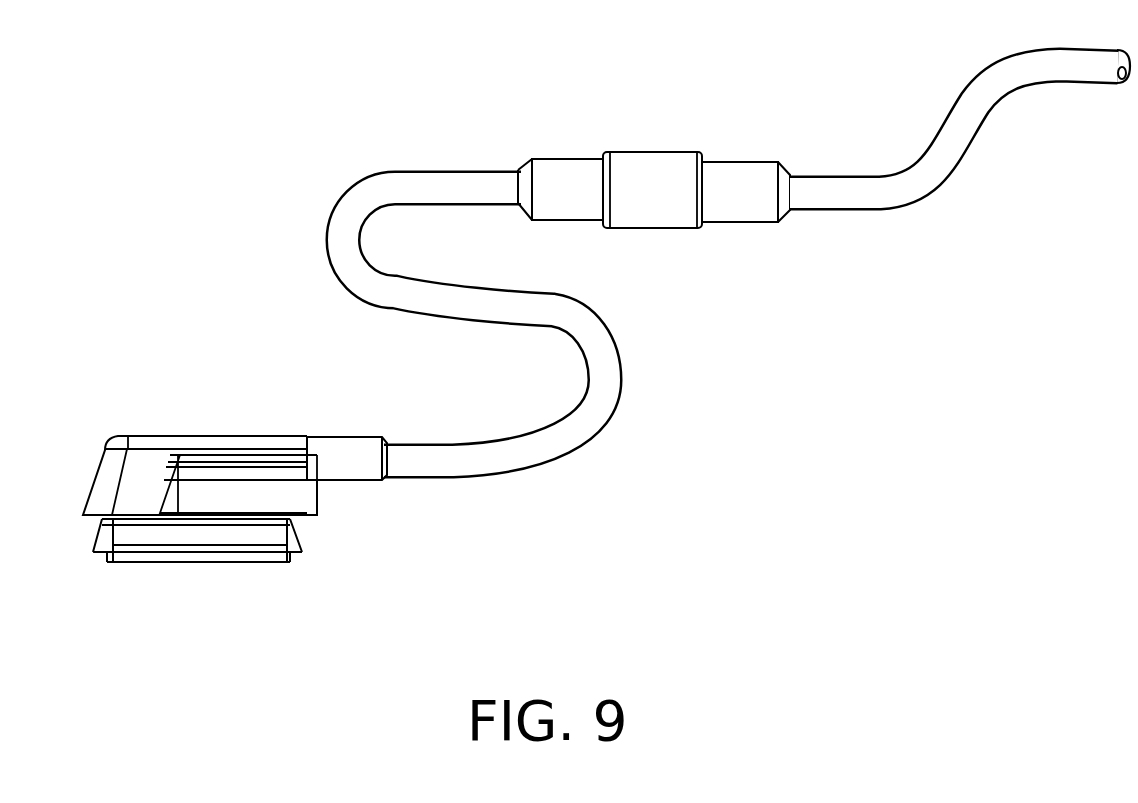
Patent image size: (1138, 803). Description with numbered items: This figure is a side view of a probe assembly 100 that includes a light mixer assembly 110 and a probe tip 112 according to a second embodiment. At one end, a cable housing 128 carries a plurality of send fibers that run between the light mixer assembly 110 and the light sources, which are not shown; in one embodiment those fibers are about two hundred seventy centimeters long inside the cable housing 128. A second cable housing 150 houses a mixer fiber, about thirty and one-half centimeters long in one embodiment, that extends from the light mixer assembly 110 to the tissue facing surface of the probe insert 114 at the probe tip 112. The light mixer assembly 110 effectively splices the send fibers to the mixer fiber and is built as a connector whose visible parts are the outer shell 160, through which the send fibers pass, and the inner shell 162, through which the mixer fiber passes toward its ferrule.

The probe assembly 100 is at (692, 285).
The light mixer assembly 110 is at (657, 135).
The probe tip 112 is at (228, 415).
The probe insert 114 is at (303, 543).
The cable housing 128 is at (953, 120).
The second cable housing 150 is at (600, 442).
The outer shell 160 is at (677, 153).
The inner shell 162 is at (567, 155).